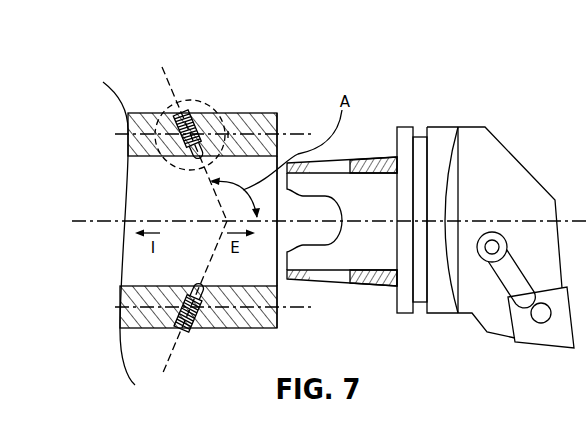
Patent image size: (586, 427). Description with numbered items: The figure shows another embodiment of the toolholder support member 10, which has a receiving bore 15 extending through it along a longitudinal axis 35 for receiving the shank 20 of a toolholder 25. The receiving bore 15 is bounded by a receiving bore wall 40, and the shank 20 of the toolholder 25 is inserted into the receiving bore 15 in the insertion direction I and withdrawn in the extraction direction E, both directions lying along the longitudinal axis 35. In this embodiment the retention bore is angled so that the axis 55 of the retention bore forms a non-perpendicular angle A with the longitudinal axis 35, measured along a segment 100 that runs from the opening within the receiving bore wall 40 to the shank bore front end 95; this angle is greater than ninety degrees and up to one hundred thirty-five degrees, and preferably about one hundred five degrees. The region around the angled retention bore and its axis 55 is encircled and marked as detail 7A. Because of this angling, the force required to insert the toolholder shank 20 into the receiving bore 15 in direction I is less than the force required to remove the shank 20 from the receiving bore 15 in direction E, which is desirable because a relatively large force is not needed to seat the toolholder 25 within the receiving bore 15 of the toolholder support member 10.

The toolholder support member 10 is at (141, 103).
The receiving bore 15 is at (140, 273).
The shank 20 is at (367, 157).
The toolholder 25 is at (502, 172).
The longitudinal axis 35 is at (83, 222).
The receiving bore wall 40 is at (157, 158).
The axis of the retention bore 55 is at (167, 78).
The detail region 7A is at (207, 100).
The shank bore front end 95 is at (277, 120).
The segment 100 is at (285, 222).